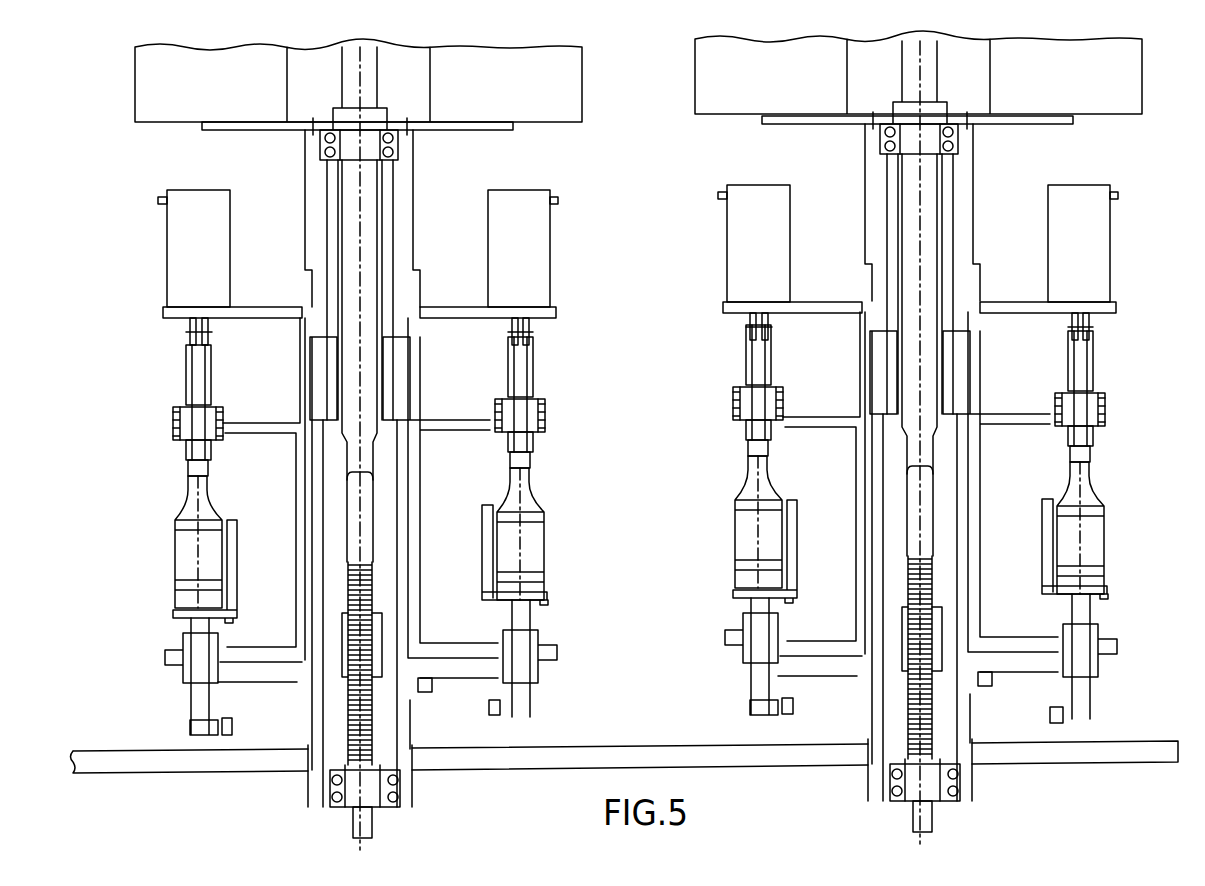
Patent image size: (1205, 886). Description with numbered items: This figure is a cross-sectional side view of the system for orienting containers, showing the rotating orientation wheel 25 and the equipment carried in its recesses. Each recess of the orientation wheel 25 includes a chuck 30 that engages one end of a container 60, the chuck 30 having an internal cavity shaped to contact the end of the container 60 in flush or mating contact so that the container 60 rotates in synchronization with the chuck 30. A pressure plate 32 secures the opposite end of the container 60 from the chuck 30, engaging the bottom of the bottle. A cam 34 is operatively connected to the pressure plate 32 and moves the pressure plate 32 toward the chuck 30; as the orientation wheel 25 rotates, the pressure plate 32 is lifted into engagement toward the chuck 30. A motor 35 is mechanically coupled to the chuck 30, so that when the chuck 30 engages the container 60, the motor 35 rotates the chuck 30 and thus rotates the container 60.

The orientation wheel 25 is at (407, 193).
The motor 35 is at (213, 283).
The chuck 30 is at (213, 463).
The container 60 is at (215, 500).
The pressure plate 32 is at (173, 600).
The cam 34 is at (228, 735).